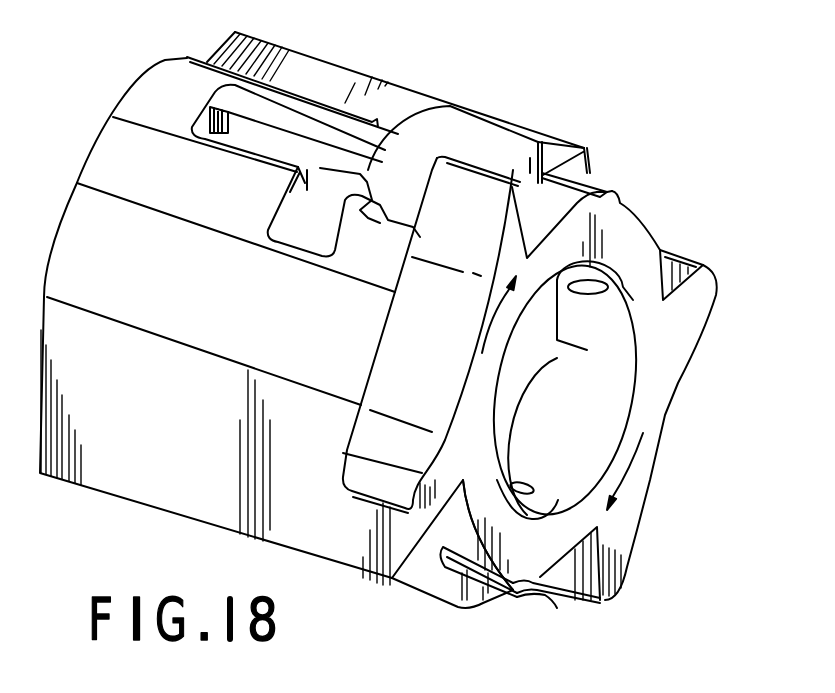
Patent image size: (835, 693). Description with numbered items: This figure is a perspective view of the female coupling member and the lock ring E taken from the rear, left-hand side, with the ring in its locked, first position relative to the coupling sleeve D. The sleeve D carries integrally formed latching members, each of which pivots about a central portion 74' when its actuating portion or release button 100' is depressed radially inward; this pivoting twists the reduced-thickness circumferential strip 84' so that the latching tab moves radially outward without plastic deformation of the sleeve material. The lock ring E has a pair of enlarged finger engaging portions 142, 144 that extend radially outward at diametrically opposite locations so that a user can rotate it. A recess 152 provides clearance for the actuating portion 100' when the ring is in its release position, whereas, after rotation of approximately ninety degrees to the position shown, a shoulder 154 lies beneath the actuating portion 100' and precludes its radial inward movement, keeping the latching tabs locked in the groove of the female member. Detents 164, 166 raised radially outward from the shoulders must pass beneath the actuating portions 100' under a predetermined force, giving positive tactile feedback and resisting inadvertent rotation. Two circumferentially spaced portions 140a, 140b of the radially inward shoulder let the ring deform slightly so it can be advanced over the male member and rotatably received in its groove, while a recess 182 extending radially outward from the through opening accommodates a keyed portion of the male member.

The central portion 74' is at (397, 108).
The actuating portion 100' is at (480, 123).
The circumferential strip 84' is at (344, 235).
The finger engaging portion 142 is at (423, 333).
The finger engaging portion 144 is at (692, 307).
The detent 164 is at (590, 187).
The shoulder 154 is at (600, 193).
The recess 182 is at (565, 385).
The circumferentially spaced portion 140a is at (602, 277).
The circumferentially spaced portion 140b is at (535, 505).
The recess 152 is at (447, 527).
The detent 166 is at (518, 594).
The lock ring E is at (650, 240).
The coupling sleeve D is at (104, 488).